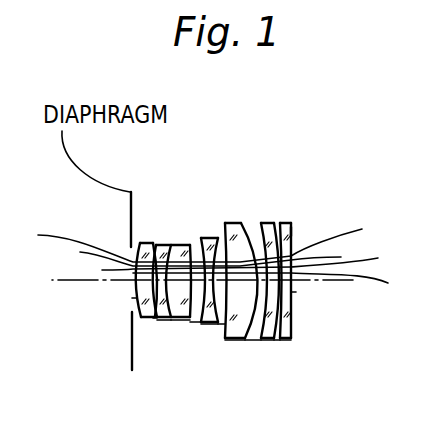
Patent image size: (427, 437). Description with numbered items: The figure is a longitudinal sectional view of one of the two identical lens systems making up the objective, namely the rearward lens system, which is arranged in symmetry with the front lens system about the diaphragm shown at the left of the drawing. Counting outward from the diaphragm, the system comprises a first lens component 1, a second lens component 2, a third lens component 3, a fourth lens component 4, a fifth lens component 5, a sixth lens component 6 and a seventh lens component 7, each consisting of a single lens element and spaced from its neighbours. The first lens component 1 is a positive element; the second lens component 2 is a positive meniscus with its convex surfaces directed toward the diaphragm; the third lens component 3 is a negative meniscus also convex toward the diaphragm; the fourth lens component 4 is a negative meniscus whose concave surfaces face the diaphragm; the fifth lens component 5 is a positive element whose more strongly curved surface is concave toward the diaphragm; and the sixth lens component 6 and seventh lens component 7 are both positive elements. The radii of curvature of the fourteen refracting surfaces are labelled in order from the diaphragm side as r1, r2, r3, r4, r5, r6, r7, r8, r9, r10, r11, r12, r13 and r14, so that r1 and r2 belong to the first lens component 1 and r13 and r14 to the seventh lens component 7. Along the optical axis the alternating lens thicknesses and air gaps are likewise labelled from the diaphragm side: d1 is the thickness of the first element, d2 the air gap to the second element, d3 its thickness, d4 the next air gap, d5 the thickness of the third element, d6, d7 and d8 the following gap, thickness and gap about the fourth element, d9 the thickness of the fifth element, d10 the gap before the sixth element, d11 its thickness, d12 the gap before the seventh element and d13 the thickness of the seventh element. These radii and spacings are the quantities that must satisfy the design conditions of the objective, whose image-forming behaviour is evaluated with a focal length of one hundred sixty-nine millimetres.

The first lens component 1 is at (158, 242).
The second lens component 2 is at (178, 253).
The third lens component 3 is at (189, 270).
The fourth lens component 4 is at (347, 285).
The fifth lens component 5 is at (342, 260).
The sixth lens component 6 is at (323, 251).
The seventh lens component 7 is at (334, 236).
The radius of curvature of the first surface r1 is at (136, 254).
The radius of curvature of the second surface r2 is at (147, 242).
The radius of curvature of the third surface r3 is at (156, 244).
The radius of curvature of the fourth surface r4 is at (172, 244).
The radius of curvature of the fifth surface r5 is at (185, 244).
The radius of curvature of the sixth surface r6 is at (201, 238).
The radius of curvature of the seventh surface r7 is at (216, 238).
The radius of curvature of the eighth surface r8 is at (223, 238).
The radius of curvature of the ninth surface r9 is at (238, 228).
The radius of curvature of the tenth surface r10 is at (262, 238).
The radius of curvature of the eleventh surface r11 is at (274, 224).
The radius of curvature of the twelfth surface r12 is at (282, 224).
The radius of curvature of the thirteenth surface r13 is at (292, 225).
The radius of curvature of the fourteenth surface r14 is at (292, 231).
The thickness of the first lens element d1 is at (133, 298).
The air gap between first and second lens elements d2 is at (157, 318).
The thickness of the second lens element d3 is at (168, 318).
The air gap between second and third lens elements d4 is at (178, 318).
The thickness of the third lens element d5 is at (193, 322).
The air gap between third and fourth lens elements d6 is at (213, 322).
The thickness of the fourth lens element d7 is at (224, 322).
The air gap between fourth and fifth lens elements d8 is at (224, 340).
The thickness of the fifth lens element d9 is at (244, 338).
The air gap between fifth and sixth lens elements d10 is at (256, 338).
The thickness of the sixth lens element d11 is at (268, 338).
The air gap between sixth and seventh lens elements d12 is at (287, 340).
The thickness of the seventh lens element d13 is at (292, 292).